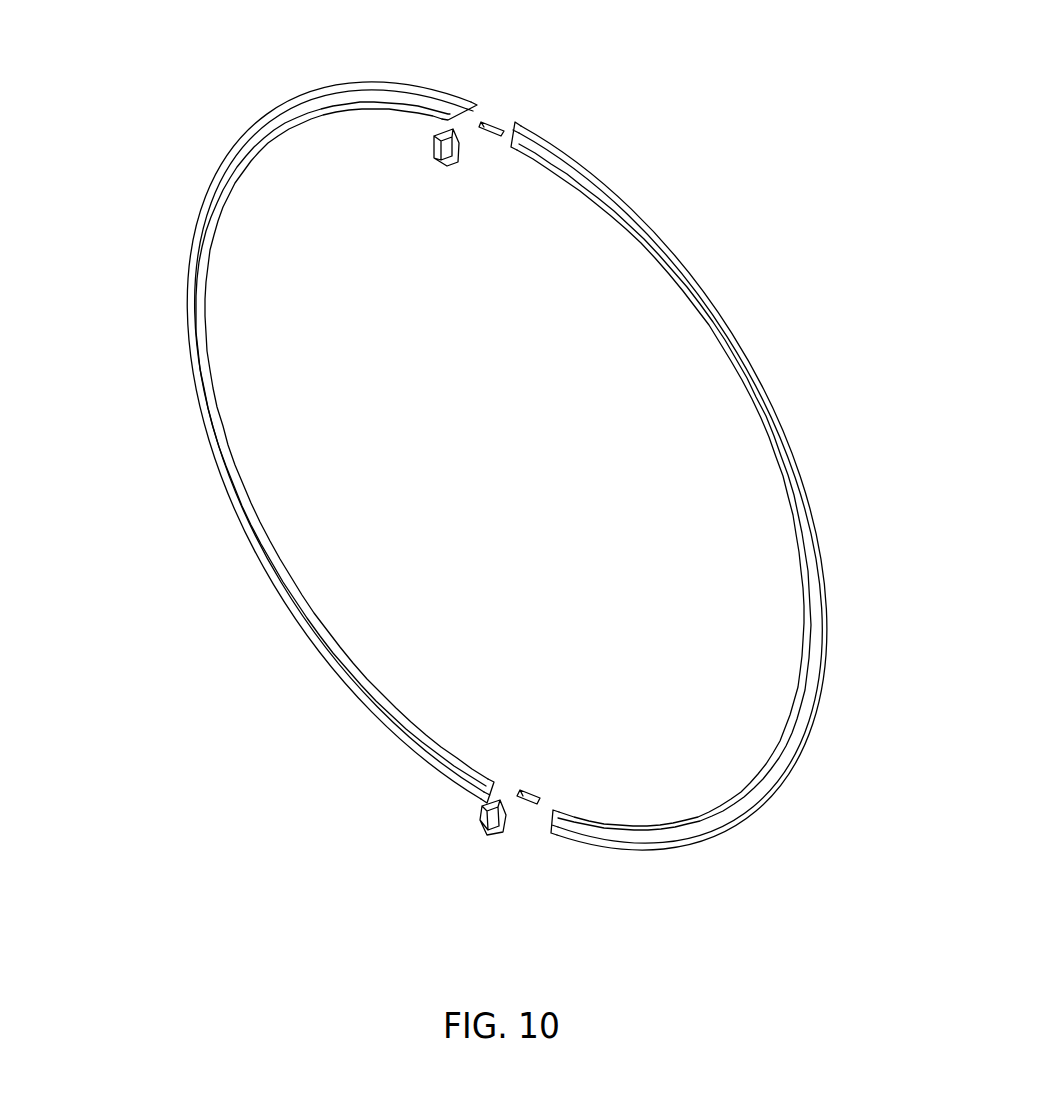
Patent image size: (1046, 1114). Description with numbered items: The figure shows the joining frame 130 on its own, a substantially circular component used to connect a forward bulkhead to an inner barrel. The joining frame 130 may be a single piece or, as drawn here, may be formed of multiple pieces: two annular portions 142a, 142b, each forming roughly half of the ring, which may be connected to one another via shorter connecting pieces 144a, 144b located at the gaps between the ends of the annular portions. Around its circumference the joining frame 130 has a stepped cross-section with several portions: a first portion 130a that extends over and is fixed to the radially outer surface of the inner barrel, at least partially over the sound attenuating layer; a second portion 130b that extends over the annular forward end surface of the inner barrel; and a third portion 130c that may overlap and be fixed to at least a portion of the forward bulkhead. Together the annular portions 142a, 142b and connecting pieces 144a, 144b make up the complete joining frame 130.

The joining frame 130 is at (502, 455).
The first portion 130a is at (465, 110).
The second portion 130b is at (560, 812).
The third portion 130c is at (517, 151).
The annular portion 142a is at (828, 462).
The annular portion 142b is at (182, 447).
The connecting piece 144a is at (497, 123).
The connecting piece 144b is at (446, 163).